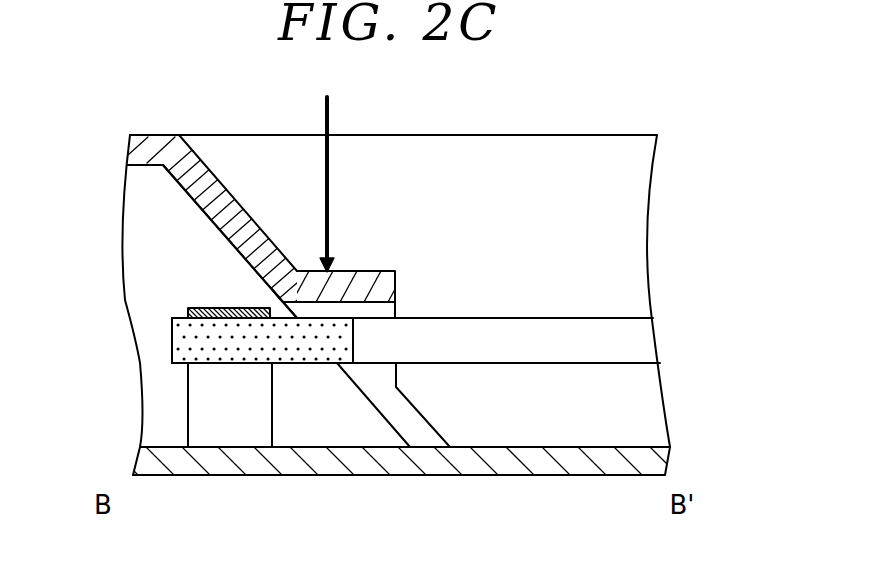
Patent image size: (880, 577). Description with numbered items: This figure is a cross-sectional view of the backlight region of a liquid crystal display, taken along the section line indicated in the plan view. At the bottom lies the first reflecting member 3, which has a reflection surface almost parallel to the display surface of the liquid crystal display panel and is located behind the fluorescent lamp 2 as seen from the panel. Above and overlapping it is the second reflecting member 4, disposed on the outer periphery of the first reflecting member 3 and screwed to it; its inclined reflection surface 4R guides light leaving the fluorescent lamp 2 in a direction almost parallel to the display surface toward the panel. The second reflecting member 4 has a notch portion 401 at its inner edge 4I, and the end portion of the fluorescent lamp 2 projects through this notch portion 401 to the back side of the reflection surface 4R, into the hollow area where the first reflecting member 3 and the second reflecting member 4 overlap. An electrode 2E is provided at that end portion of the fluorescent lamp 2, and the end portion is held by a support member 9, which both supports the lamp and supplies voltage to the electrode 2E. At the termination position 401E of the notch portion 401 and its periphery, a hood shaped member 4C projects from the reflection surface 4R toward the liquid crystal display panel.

The fluorescent lamp 2 is at (633, 339).
The electrode 2E is at (190, 343).
The first reflecting member 3 is at (290, 467).
The second reflecting member 4 is at (195, 195).
The reflection surface 4R is at (237, 202).
The hood shaped member 4C is at (363, 268).
The inner edge 4I is at (438, 427).
The support member 9 is at (188, 308).
The notch portion 401 is at (377, 394).
The termination position 401E is at (281, 302).